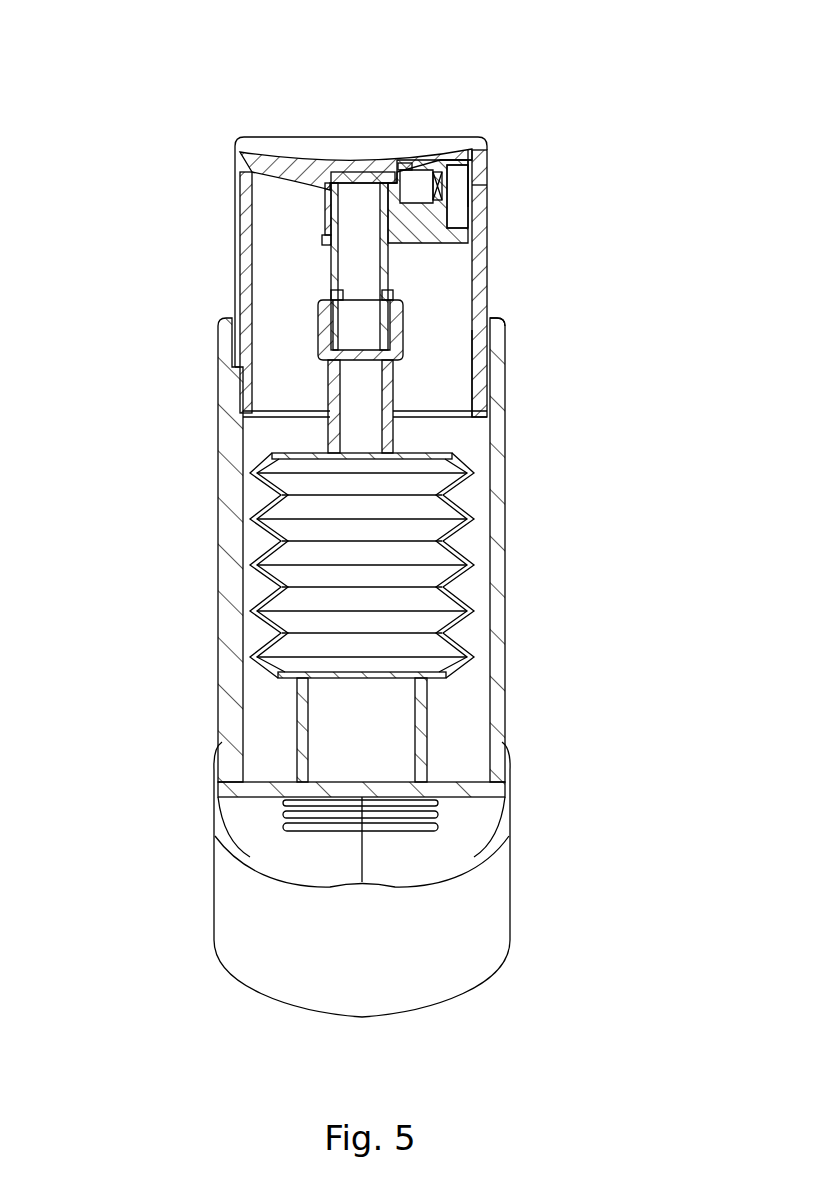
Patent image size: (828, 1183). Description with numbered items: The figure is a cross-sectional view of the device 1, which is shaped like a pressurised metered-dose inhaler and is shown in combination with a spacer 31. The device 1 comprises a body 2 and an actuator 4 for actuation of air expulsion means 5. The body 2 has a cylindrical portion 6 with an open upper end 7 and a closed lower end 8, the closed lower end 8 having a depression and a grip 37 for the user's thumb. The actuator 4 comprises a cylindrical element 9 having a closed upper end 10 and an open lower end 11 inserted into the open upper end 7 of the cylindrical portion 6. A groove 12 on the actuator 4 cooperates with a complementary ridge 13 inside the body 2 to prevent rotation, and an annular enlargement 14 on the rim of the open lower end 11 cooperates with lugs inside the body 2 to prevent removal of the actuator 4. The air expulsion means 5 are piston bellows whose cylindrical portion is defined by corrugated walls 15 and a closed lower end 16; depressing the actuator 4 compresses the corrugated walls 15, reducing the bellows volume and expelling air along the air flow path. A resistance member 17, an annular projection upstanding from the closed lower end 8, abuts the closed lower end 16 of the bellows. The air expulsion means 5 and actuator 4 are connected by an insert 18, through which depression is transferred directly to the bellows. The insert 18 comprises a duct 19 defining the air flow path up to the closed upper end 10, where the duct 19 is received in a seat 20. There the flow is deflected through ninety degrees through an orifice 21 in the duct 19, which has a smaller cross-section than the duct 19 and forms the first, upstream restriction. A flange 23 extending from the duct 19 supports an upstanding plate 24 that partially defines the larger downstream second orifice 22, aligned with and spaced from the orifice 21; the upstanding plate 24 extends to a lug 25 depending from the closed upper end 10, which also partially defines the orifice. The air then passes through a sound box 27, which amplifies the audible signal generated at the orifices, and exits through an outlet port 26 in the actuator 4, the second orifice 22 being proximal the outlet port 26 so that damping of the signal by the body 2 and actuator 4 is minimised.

The device 1 is at (552, 352).
The body 2 is at (178, 598).
The actuator 4 is at (507, 180).
The air expulsion means 5 is at (430, 548).
The cylindrical portion 6 is at (503, 640).
The open upper end 7 is at (493, 316).
The closed lower end 8 is at (465, 828).
The cylindrical element 9 is at (481, 277).
The closed upper end 10 is at (298, 152).
The open lower end 11 is at (484, 410).
The groove 12 is at (240, 215).
The ridge 13 is at (232, 390).
The annular enlargement 14 is at (483, 372).
The corrugated walls 15 is at (461, 605).
The closed lower end 16 is at (388, 680).
The resistance member 17 is at (427, 755).
The insert 18 is at (312, 259).
The duct 19 is at (340, 272).
The seat 20 is at (330, 190).
The orifice 21 is at (404, 165).
The second orifice 22 is at (450, 152).
The flange 23 is at (487, 252).
The upstanding plate 24 is at (487, 192).
The lug 25 is at (439, 174).
The outlet port 26 is at (482, 178).
The sound box 27 is at (457, 218).
The spacer 31 is at (242, 943).
The grip 37 is at (403, 822).